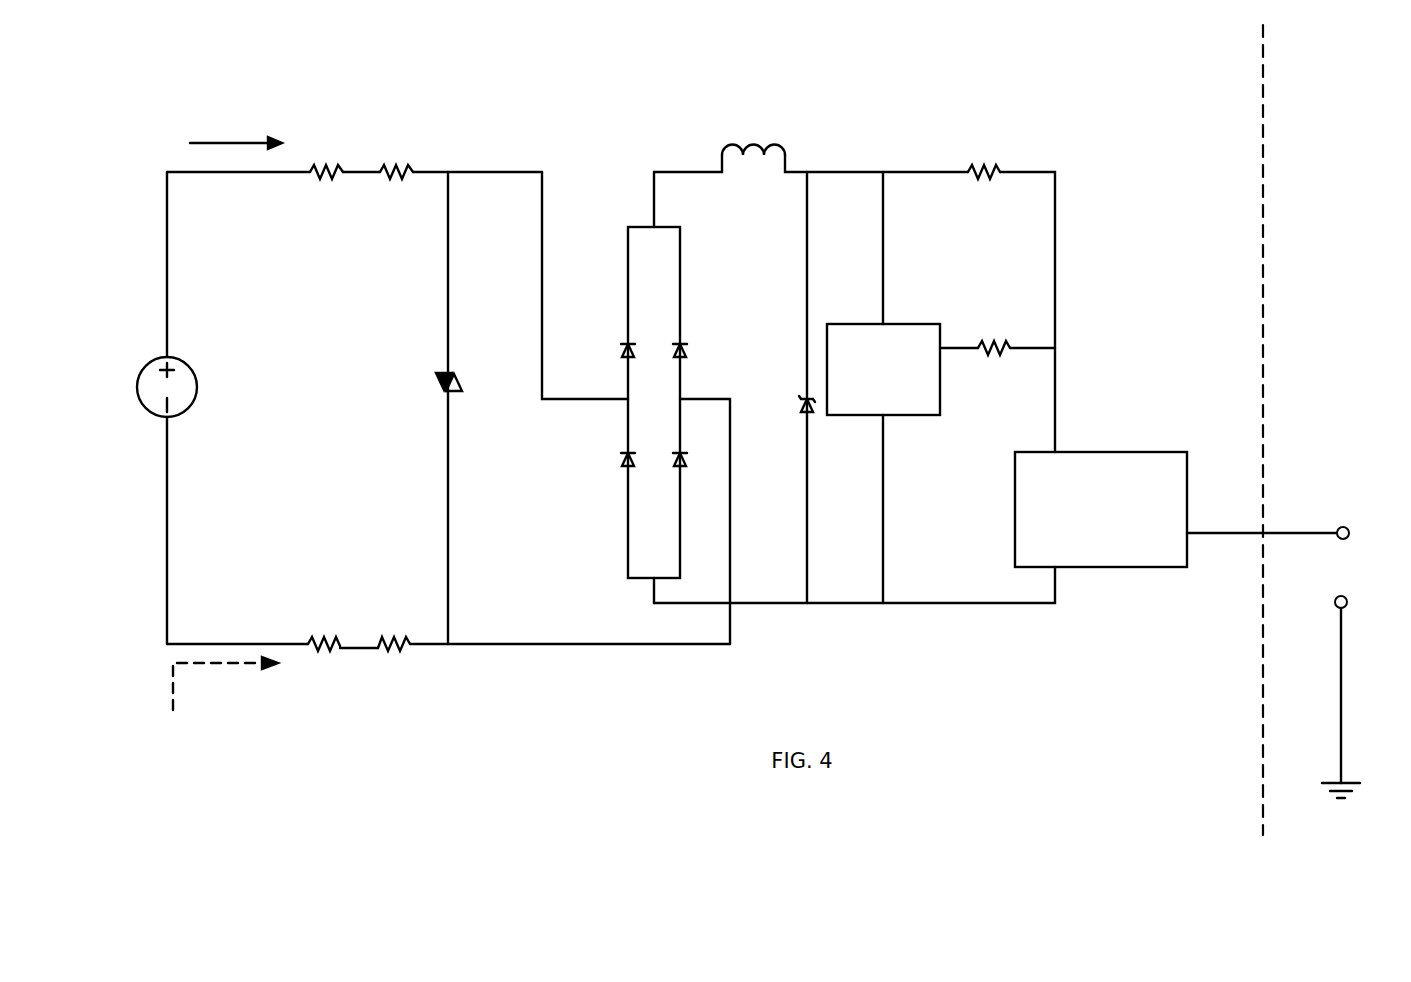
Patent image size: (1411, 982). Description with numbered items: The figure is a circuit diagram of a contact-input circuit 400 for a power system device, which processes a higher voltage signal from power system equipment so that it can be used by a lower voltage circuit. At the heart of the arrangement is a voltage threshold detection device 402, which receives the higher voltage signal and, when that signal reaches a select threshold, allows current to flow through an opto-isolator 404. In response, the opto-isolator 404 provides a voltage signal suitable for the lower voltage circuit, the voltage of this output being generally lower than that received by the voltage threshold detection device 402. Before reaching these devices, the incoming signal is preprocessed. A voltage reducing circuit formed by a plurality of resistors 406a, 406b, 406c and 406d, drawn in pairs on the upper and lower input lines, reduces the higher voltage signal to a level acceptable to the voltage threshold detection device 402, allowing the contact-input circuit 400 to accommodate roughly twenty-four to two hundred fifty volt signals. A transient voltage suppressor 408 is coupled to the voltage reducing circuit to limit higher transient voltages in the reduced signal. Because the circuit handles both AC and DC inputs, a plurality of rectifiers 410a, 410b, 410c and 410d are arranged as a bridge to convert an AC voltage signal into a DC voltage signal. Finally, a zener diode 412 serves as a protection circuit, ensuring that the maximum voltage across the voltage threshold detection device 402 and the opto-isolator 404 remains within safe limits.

The contact-input circuit 400 is at (1347, 118).
The voltage threshold detection device 402 is at (917, 335).
The opto-isolator 404 is at (1130, 538).
The resistor 406a is at (323, 160).
The resistor 406b is at (412, 163).
The resistor 406c is at (330, 648).
The resistor 406d is at (405, 647).
The transient voltage suppressor 408 is at (438, 378).
The rectifier 410a is at (623, 345).
The rectifier 410b is at (685, 345).
The rectifier 410c is at (623, 462).
The rectifier 410d is at (680, 463).
The zener diode 412 is at (806, 413).